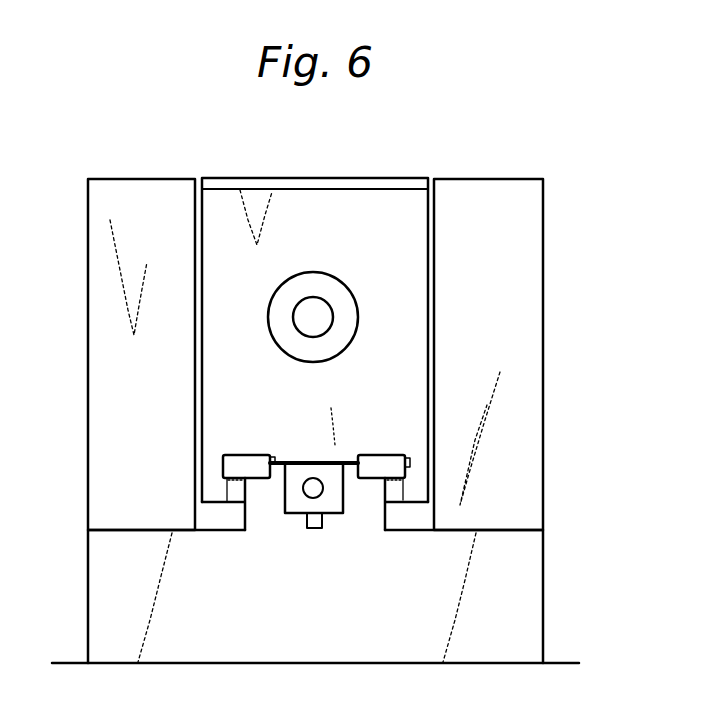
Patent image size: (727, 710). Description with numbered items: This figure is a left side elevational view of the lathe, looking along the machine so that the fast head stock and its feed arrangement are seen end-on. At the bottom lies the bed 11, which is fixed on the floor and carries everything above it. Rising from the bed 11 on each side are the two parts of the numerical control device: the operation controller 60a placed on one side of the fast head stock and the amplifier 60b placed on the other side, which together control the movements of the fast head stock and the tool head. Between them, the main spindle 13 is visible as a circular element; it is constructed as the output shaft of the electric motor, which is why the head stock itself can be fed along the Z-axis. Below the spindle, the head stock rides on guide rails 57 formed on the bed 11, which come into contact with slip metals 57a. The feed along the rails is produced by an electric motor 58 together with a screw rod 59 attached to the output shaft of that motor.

The bed 11 is at (523, 588).
The main spindle 13 is at (321, 310).
The guide rails 57 is at (252, 455).
The slip metals 57a is at (407, 457).
The electric motor 58 is at (333, 508).
The screw rod 59 is at (308, 493).
The operation controller 60a is at (525, 226).
The amplifier 60b is at (150, 184).